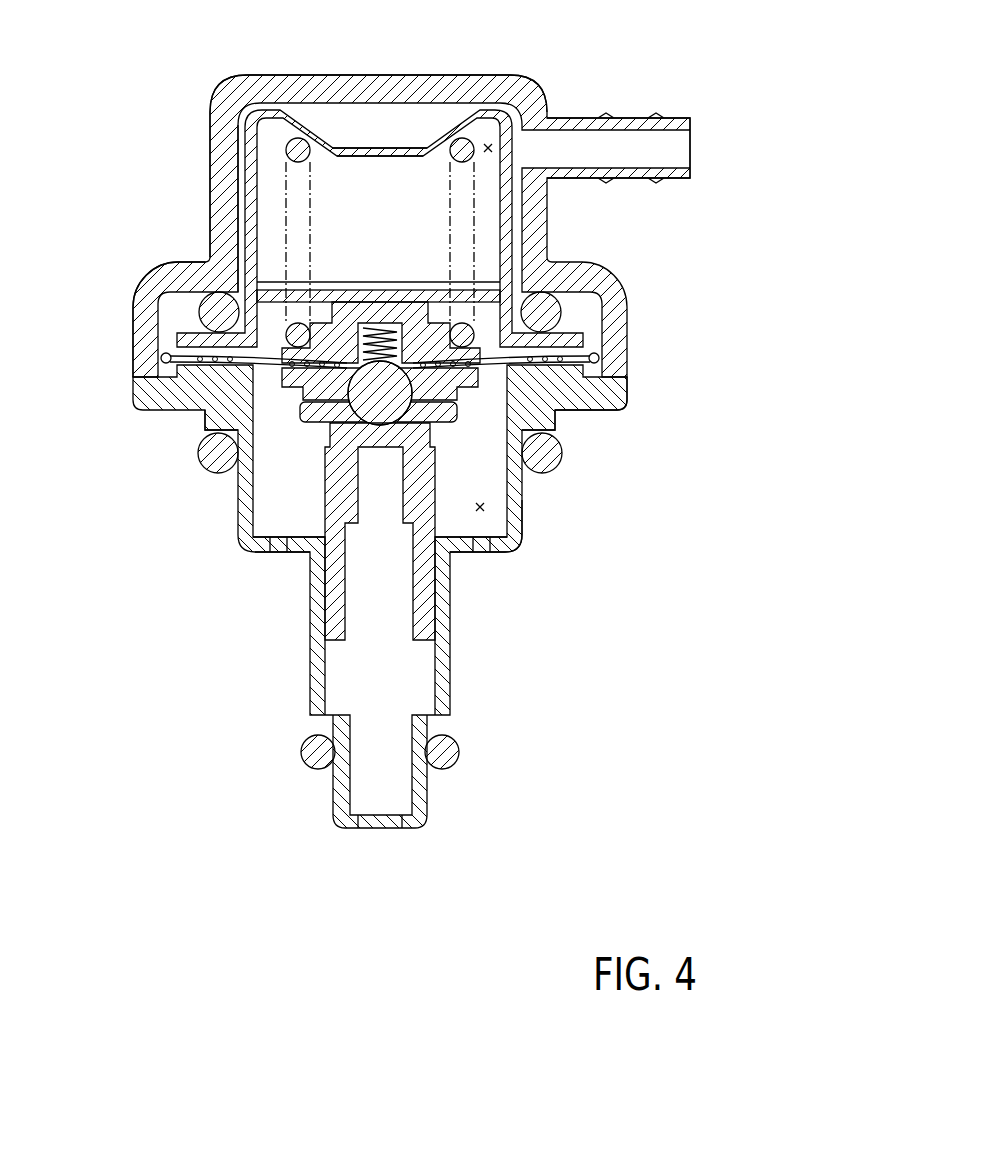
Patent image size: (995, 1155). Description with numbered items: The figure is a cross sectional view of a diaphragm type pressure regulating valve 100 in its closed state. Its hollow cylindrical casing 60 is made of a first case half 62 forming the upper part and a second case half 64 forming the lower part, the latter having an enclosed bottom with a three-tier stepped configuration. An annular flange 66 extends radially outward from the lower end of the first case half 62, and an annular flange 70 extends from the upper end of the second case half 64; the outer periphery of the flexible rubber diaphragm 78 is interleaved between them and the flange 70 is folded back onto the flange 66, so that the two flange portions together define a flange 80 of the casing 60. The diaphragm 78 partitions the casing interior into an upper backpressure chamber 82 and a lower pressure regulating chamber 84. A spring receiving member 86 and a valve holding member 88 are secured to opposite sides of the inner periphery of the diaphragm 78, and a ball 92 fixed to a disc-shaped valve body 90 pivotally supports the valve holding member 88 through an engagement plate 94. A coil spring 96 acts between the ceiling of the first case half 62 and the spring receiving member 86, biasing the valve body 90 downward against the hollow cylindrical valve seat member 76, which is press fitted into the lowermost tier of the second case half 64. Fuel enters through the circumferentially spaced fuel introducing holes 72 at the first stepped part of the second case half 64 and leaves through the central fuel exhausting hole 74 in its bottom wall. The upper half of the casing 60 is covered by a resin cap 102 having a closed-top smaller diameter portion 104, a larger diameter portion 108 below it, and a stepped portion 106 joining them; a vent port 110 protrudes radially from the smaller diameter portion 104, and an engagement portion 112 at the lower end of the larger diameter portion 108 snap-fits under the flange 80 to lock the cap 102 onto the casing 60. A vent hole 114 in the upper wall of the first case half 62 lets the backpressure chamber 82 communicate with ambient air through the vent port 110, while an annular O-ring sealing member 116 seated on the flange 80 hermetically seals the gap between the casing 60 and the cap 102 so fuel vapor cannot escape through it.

The casing 60 is at (522, 217).
The first case half 62 is at (243, 162).
The second case half 64 is at (233, 550).
The annular flange 66 is at (587, 358).
The annular flange 70 is at (557, 372).
The fuel introducing holes 72 is at (282, 547).
The fuel exhausting hole 74 is at (385, 832).
The valve seat member 76 is at (423, 510).
The diaphragm 78 is at (262, 325).
The flange 80 is at (158, 322).
The backpressure chamber 82 is at (488, 148).
The pressure regulating chamber 84 is at (517, 522).
The spring receiving member 86 is at (322, 308).
The valve holding member 88 is at (205, 425).
The valve body 90 is at (330, 435).
The ball 92 is at (480, 507).
The engagement plate 94 is at (208, 462).
The spring 96 is at (288, 138).
The pressure regulating valve 100 is at (722, 233).
The cap 102 is at (257, 77).
The smaller diameter portion 104 is at (228, 148).
The stepped portion 106 is at (187, 273).
The larger diameter portion 108 is at (143, 364).
The vent port 110 is at (660, 118).
The engagement portion 112 is at (590, 409).
The vent hole 114 is at (407, 148).
The sealing member 116 is at (560, 312).